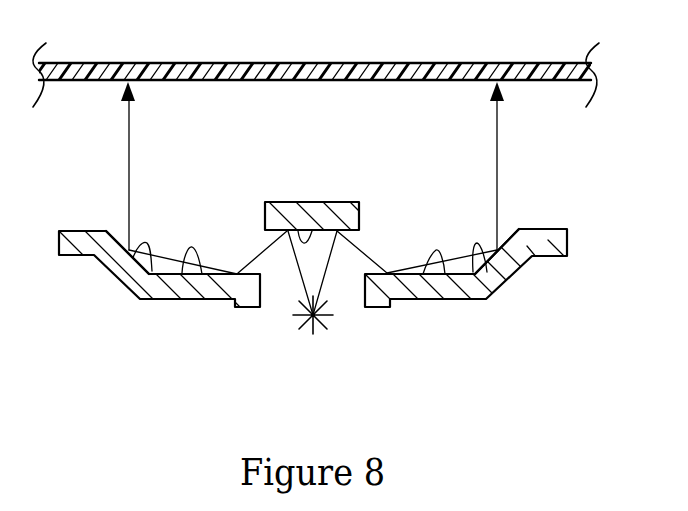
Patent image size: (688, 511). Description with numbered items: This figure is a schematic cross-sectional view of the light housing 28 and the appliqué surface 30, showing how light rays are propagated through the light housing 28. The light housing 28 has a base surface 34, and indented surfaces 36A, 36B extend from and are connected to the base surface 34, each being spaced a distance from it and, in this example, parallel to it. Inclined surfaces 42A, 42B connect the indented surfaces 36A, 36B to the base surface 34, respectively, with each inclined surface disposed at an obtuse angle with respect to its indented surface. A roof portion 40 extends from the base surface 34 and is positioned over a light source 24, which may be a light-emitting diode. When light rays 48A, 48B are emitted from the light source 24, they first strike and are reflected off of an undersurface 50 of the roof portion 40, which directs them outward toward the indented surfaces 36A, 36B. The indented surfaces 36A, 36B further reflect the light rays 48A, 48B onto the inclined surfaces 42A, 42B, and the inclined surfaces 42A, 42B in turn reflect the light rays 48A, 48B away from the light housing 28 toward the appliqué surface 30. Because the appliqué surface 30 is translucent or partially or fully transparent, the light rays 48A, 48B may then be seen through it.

The light source 24 is at (321, 334).
The light housing 28 is at (556, 214).
The appliqué surface 30 is at (518, 63).
The base surface 34 is at (82, 230).
The indented surface 36A is at (202, 274).
The indented surface 36B is at (423, 274).
The roof portion 40 is at (340, 208).
The inclined surface 42A is at (140, 253).
The inclined surface 42B is at (503, 277).
The light ray 48A is at (263, 252).
The light ray 48B is at (364, 251).
The undersurface 50 is at (301, 233).